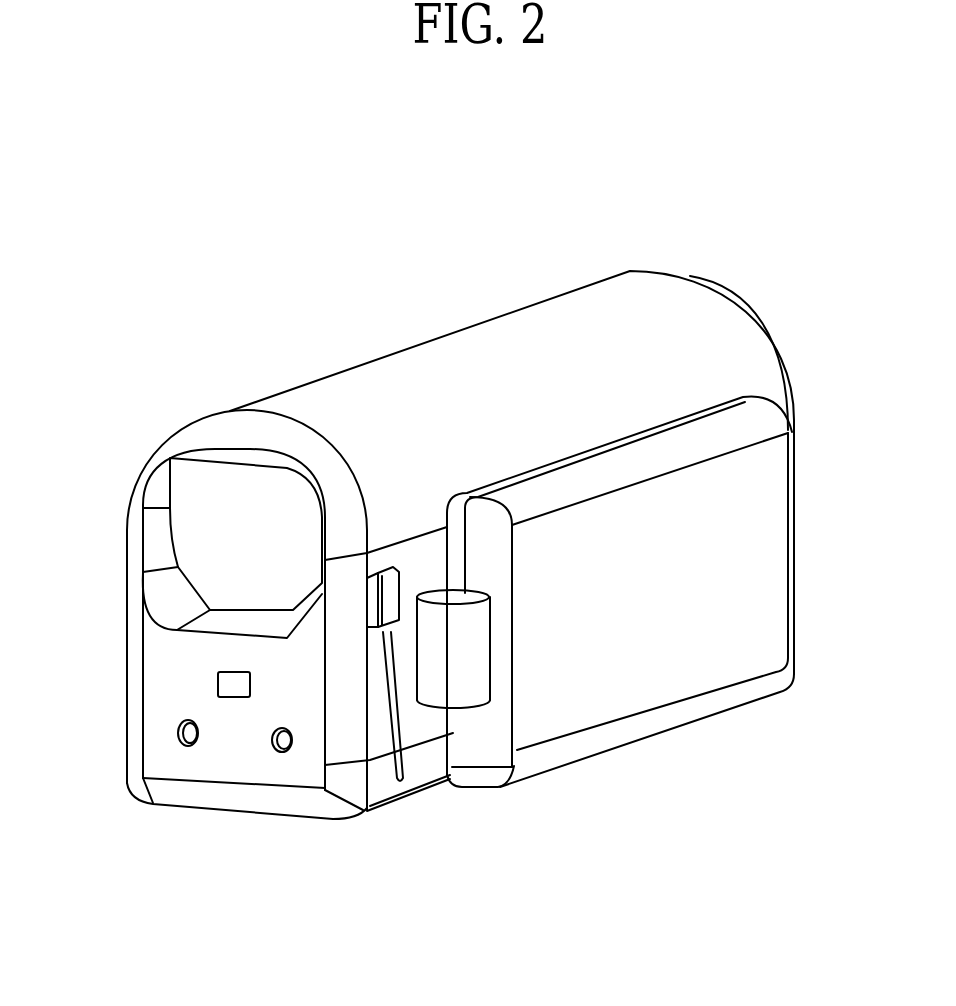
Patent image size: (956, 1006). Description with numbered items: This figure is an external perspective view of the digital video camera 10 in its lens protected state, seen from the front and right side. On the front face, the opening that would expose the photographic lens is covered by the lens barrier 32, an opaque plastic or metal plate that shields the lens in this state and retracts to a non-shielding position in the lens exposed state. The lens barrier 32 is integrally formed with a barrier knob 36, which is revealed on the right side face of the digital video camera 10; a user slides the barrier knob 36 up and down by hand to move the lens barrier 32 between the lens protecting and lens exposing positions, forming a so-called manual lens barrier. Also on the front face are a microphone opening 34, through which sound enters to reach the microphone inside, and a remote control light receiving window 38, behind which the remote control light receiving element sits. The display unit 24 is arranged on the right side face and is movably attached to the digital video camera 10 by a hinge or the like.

The digital video camera 10 is at (486, 258).
The display unit 24 is at (685, 673).
The lens barrier 32 is at (220, 557).
The microphone opening 34 is at (192, 745).
The barrier knob 36 is at (388, 612).
The remote control light receiving window 38 is at (218, 684).